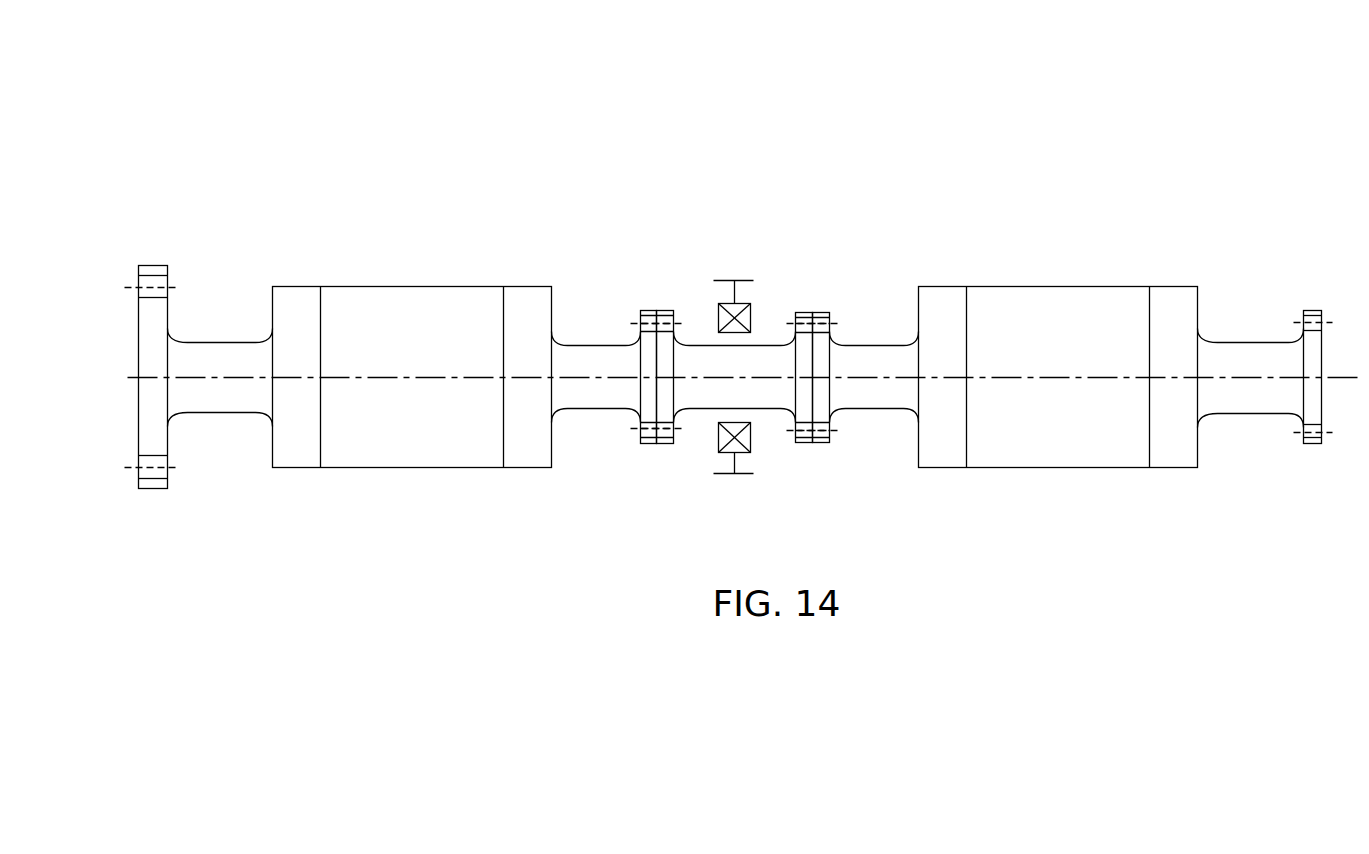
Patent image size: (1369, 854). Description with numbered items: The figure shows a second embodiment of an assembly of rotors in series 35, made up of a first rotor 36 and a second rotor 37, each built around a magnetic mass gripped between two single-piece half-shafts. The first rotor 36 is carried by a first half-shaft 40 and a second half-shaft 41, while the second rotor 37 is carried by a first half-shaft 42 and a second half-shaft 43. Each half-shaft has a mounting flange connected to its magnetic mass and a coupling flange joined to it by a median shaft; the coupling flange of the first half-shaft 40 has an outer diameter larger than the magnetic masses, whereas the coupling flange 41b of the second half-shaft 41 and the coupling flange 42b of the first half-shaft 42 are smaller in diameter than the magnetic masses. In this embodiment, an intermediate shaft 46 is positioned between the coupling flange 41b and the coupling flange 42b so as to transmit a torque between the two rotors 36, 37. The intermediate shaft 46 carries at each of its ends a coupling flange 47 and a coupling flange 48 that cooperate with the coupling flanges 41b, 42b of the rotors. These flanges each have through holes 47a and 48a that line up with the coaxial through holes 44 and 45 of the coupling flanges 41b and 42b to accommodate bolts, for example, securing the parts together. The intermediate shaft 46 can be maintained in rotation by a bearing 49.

The assembly of rotors in series 35 is at (1085, 90).
The first rotor 36 is at (392, 243).
The second rotor 37 is at (1072, 245).
The first half-shaft 40 is at (213, 305).
The second half-shaft 41 is at (602, 290).
The coupling flange 41b is at (648, 310).
The first half-shaft 42 is at (882, 275).
The coupling flange 42b is at (820, 312).
The second half-shaft 43 is at (1240, 318).
The through holes 44 is at (640, 322).
The through holes 45 is at (830, 322).
The intermediate shaft 46 is at (697, 400).
The coupling flange 47 is at (663, 445).
The through holes 47a is at (655, 444).
The coupling flange 48 is at (805, 312).
The through holes 48a is at (797, 442).
The bearing 49 is at (734, 492).